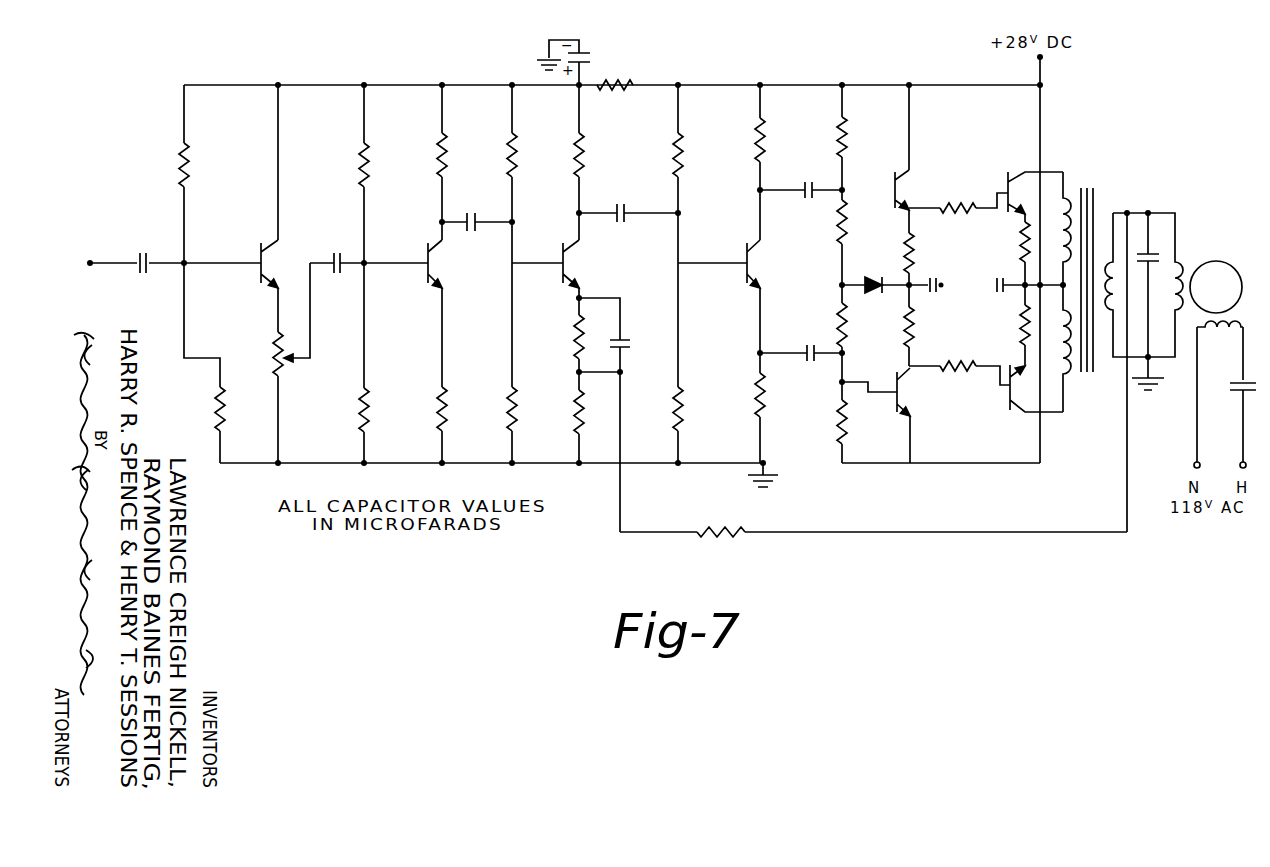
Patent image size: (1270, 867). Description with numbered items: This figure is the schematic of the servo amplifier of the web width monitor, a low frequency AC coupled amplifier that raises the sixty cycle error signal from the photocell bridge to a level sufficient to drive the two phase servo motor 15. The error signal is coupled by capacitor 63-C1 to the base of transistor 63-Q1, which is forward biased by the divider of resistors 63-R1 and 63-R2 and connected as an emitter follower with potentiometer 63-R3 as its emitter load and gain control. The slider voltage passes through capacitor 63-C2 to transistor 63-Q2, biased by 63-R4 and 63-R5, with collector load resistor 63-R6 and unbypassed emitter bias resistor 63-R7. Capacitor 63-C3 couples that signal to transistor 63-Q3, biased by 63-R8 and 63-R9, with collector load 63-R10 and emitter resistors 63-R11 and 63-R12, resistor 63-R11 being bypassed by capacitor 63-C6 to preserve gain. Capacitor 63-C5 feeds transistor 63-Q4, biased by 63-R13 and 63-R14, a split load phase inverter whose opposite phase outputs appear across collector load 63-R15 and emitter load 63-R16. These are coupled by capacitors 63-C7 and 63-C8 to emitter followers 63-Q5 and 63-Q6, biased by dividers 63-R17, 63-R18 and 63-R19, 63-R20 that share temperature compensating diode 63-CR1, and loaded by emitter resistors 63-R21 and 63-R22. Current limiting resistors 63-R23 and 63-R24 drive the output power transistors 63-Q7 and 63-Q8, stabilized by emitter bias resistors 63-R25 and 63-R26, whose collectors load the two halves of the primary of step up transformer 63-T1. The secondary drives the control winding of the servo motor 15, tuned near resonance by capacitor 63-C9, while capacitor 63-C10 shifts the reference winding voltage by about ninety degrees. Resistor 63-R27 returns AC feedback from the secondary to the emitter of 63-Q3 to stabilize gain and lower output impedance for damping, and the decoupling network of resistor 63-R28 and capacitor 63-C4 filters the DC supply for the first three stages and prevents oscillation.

The coupling capacitor 63-C1 is at (135, 263).
The voltage divider resistor 63-R1 is at (158, 160).
The voltage divider resistor 63-R2 is at (245, 406).
The emitter follower transistor 63-Q1 is at (254, 255).
The potentiometer 63-R3 is at (294, 351).
The coupling capacitor 63-C2 is at (328, 264).
The voltage divider resistor 63-R4 is at (334, 159).
The voltage divider resistor 63-R5 is at (363, 408).
The transistor 63-Q2 is at (432, 255).
The collector load resistor 63-R6 is at (435, 152).
The coupling capacitor 63-C3 is at (477, 223).
The emitter bias resistor 63-R7 is at (451, 408).
The voltage divider resistor 63-R8 is at (512, 148).
The voltage divider resistor 63-R9 is at (518, 418).
The transistor 63-Q3 is at (581, 253).
The collector load resistor 63-R10 is at (577, 151).
The coupling capacitor 63-C5 is at (628, 216).
The emitter resistor 63-R11 is at (562, 337).
The bypass capacitor 63-C6 is at (614, 415).
The emitter resistor 63-R12 is at (582, 418).
The voltage divider resistor 63-R13 is at (655, 151).
The voltage divider resistor 63-R14 is at (661, 411).
The split load phase inverter transistor 63-Q4 is at (748, 257).
The collector load resistor 63-R15 is at (757, 138).
The emitter load resistor 63-R16 is at (760, 392).
The coupling capacitor 63-C7 is at (801, 185).
The voltage divider resistor 63-R17 is at (840, 124).
The voltage divider resistor 63-R18 is at (822, 220).
The diode 63-CR1 is at (889, 278).
The voltage divider resistor 63-R19 is at (826, 325).
The coupling capacitor 63-C8 is at (801, 356).
The voltage divider resistor 63-R20 is at (843, 421).
The emitter follower transistor 63-Q5 is at (908, 174).
The emitter load resistor 63-R21 is at (940, 251).
The emitter load resistor 63-R22 is at (940, 321).
The current limiting resistor 63-R23 is at (965, 202).
The current limiting resistor 63-R24 is at (953, 367).
The emitter follower transistor 63-Q6 is at (901, 385).
The output power transistor 63-Q7 is at (1023, 165).
The emitter bias resistor 63-R25 is at (1001, 249).
The emitter bias resistor 63-R26 is at (1003, 312).
The output power transistor 63-Q8 is at (1009, 406).
The output transformer 63-T1 is at (1123, 287).
The tuning capacitor 63-C9 is at (1150, 252).
The servo motor 15 is at (1240, 250).
The phase shift capacitor 63-C10 is at (1225, 394).
The feedback resistor 63-R27 is at (723, 534).
The decoupling resistor 63-R28 is at (630, 86).
The decoupling capacitor 63-C4 is at (610, 43).